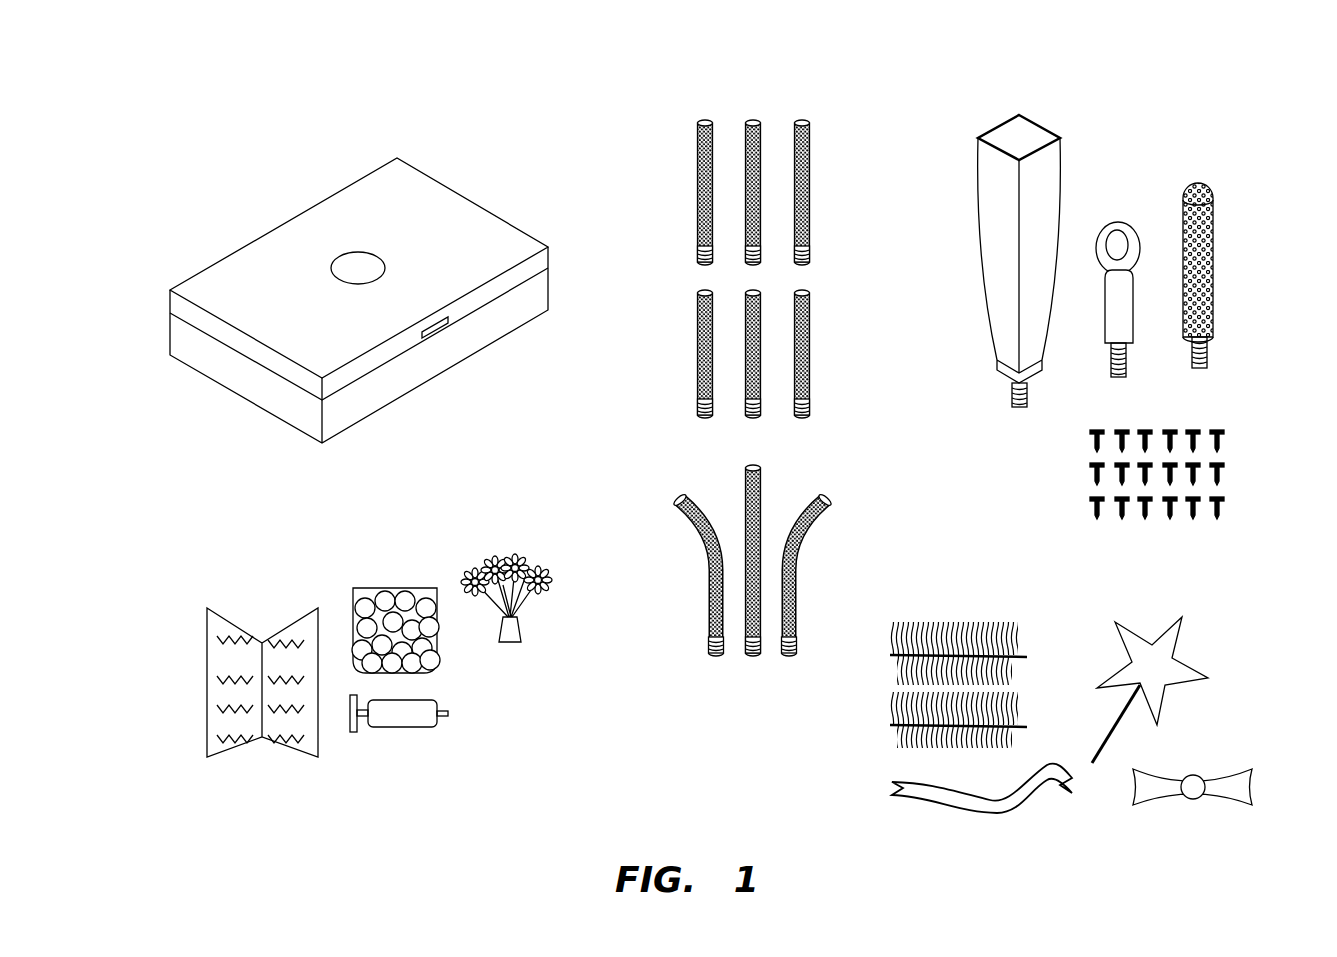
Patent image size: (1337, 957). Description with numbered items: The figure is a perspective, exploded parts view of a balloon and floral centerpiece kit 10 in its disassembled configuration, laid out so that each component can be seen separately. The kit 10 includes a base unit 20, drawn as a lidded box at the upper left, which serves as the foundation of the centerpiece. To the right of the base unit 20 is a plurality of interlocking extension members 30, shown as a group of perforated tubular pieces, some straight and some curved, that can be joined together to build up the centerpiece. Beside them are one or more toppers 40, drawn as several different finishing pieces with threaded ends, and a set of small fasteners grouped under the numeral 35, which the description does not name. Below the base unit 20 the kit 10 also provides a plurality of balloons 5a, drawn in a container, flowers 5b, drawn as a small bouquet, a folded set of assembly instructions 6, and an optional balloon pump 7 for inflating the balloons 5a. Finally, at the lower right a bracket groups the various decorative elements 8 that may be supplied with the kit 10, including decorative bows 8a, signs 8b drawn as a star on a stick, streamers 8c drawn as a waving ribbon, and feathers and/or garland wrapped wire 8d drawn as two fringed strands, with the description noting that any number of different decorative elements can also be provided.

The balloon and floral centerpiece kit 10 is at (254, 145).
The base unit 20 is at (188, 246).
The interlocking extension members 30 is at (833, 105).
The toppers 40 is at (965, 105).
The pins 35 is at (1240, 407).
The balloons 5a is at (422, 595).
The flowers 5b is at (520, 565).
The assembly instructions 6 is at (256, 630).
The balloon pump 7 is at (407, 728).
The decorative elements 8 is at (1260, 607).
The decorative bows 8a is at (1155, 790).
The signs 8b is at (1180, 632).
The streamers 8c is at (1003, 800).
The feathers and/or garland wrapped wire 8d is at (890, 725).